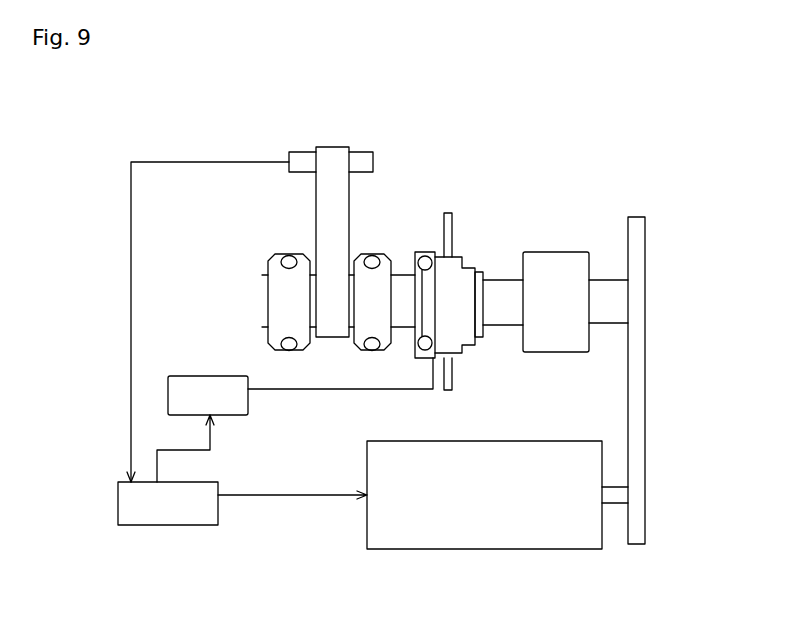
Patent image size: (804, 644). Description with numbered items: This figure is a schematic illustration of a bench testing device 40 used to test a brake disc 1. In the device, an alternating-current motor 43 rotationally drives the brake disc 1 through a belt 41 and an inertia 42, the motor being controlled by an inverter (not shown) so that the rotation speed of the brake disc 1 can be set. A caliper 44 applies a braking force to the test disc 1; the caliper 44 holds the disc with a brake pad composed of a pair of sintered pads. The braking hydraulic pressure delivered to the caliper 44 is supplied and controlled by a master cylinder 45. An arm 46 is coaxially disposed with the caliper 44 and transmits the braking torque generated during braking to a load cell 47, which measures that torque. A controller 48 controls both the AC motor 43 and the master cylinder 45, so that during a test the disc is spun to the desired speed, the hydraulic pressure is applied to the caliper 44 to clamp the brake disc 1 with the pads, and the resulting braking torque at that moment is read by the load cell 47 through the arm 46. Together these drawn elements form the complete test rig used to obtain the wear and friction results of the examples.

The bench testing device 40 is at (617, 169).
The brake disc 1 is at (458, 220).
The belt 41 is at (645, 342).
The inertia 42 is at (577, 250).
The AC motor 43 is at (535, 549).
The caliper 44 is at (462, 270).
The master cylinder 45 is at (215, 376).
The arm 46 is at (358, 219).
The load cell 47 is at (363, 150).
The controller 48 is at (175, 525).